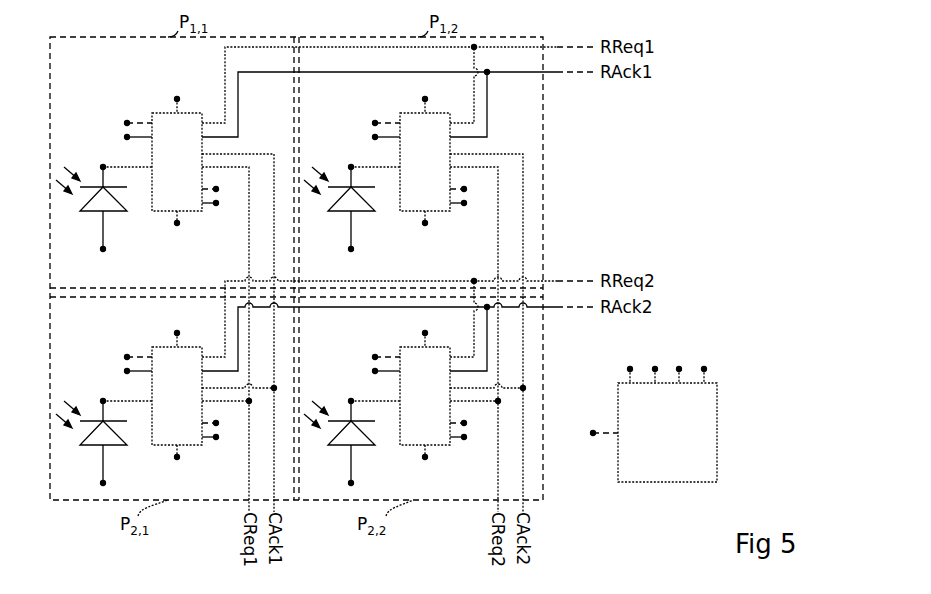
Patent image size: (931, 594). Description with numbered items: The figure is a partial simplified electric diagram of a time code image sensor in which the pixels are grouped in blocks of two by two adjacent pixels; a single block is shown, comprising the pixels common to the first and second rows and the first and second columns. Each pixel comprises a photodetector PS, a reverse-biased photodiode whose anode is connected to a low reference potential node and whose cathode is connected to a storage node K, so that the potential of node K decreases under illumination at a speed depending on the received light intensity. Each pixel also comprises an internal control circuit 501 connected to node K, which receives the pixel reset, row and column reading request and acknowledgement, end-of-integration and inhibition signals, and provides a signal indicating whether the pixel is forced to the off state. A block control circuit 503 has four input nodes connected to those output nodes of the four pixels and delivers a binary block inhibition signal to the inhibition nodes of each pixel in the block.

The internal control circuit 501 is at (152, 113).
The block control circuit 503 is at (717, 420).
The photodetector PS is at (117, 211).
The storage node K is at (103, 167).